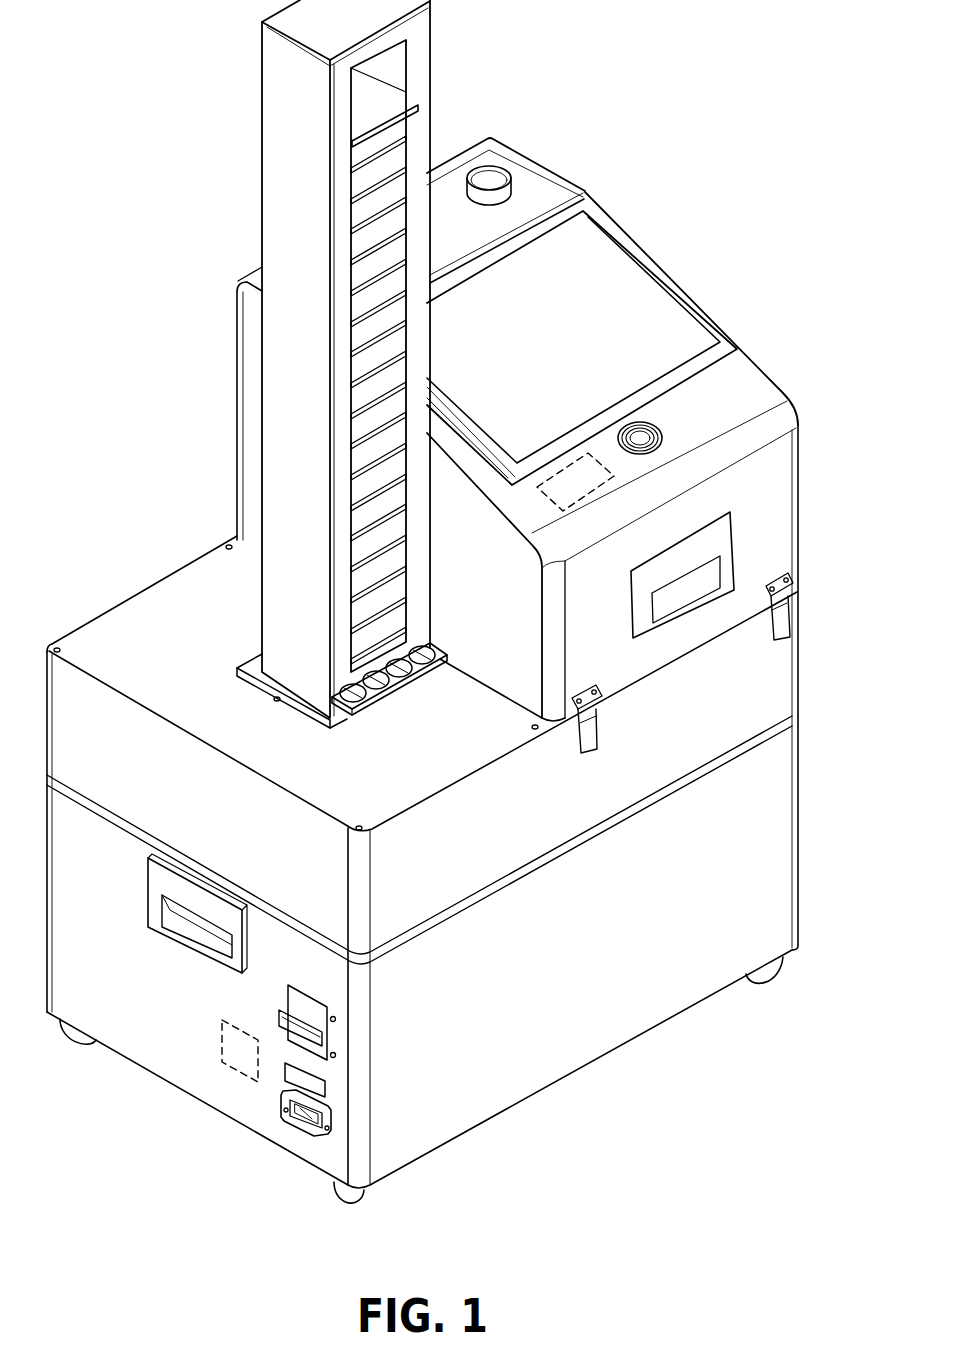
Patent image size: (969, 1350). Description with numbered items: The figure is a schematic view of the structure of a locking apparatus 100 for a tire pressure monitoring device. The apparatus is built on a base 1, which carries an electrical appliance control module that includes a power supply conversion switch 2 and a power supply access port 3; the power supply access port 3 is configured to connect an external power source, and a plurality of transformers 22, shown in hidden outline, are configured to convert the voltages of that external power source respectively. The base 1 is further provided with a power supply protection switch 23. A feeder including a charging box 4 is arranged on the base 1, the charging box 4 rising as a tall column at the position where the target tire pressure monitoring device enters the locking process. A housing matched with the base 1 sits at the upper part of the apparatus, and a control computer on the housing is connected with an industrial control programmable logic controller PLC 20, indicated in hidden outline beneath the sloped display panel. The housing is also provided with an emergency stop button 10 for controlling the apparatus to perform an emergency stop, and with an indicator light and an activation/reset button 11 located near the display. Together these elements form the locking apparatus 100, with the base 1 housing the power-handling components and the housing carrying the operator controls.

The locking apparatus 100 is at (451, 601).
The base 1 is at (451, 670).
The power supply conversion switch 2 is at (300, 1040).
The power supply access port 3 is at (292, 1122).
The charging box 4 is at (305, 650).
The emergency stop button 10 is at (507, 197).
The activation/reset button 11 is at (662, 428).
The industrial control programmable logic controller PLC 20 is at (593, 483).
The transformers 22 is at (228, 1062).
The power supply protection switch 23 is at (305, 1078).